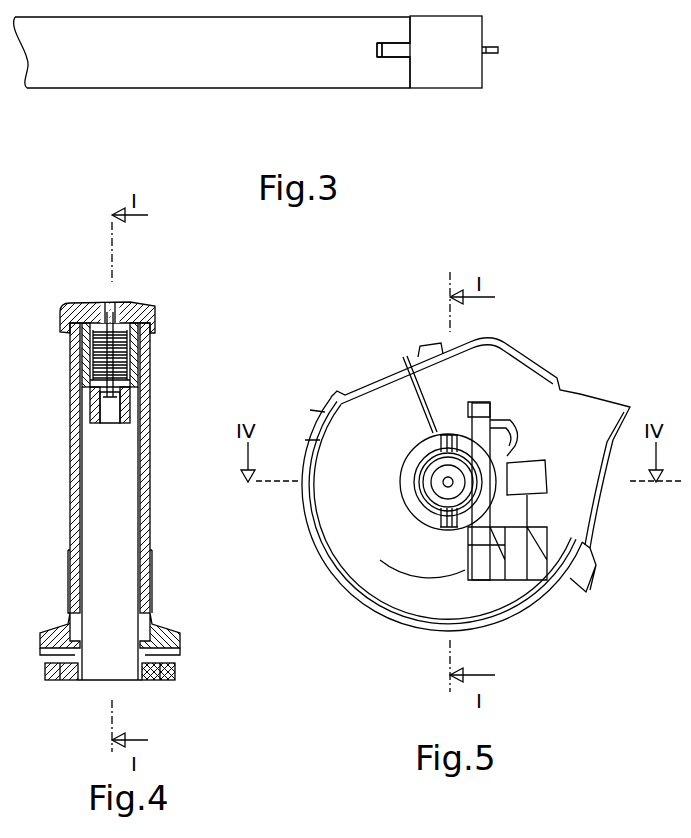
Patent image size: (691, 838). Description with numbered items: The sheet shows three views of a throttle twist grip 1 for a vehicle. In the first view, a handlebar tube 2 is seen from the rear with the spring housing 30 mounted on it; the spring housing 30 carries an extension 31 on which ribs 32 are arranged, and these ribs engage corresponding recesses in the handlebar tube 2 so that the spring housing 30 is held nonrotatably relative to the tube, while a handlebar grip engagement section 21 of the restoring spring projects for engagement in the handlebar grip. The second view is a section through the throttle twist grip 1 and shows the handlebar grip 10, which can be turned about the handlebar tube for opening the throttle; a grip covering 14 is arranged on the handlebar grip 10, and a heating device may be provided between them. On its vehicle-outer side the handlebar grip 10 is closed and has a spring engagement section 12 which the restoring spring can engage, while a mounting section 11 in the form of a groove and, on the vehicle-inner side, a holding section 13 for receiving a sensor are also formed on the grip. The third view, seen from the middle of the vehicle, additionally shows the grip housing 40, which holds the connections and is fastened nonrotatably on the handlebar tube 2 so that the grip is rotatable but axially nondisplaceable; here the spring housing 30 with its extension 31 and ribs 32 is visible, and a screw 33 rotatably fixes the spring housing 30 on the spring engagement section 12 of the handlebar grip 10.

In FIG. 4, the throttle twist grip 1 is at (141, 281).
In FIG. 5, the throttle twist grip 1 is at (545, 333).
In FIG. 3, the handlebar tube 2 is at (222, 44).
In FIG. 4, the handlebar grip 10 is at (143, 417).
In FIG. 4, the mounting section 11 is at (147, 657).
In FIG. 4, the spring engagement section 12 is at (130, 307).
In FIG. 4, the holding section 13 is at (173, 673).
In FIG. 4, the grip covering 14 is at (148, 363).
In FIG. 3, the handlebar grip engagement section 21 is at (490, 55).
In FIG. 3, the spring housing 30 is at (459, 44).
In FIG. 5, the spring housing 30 is at (413, 467).
In FIG. 5, the extension 31 is at (430, 497).
In FIG. 3, the ribs 32 is at (395, 50).
In FIG. 5, the ribs 32 is at (447, 433).
In FIG. 5, the screw 33 is at (448, 482).
In FIG. 5, the grip housing 40 is at (450, 597).